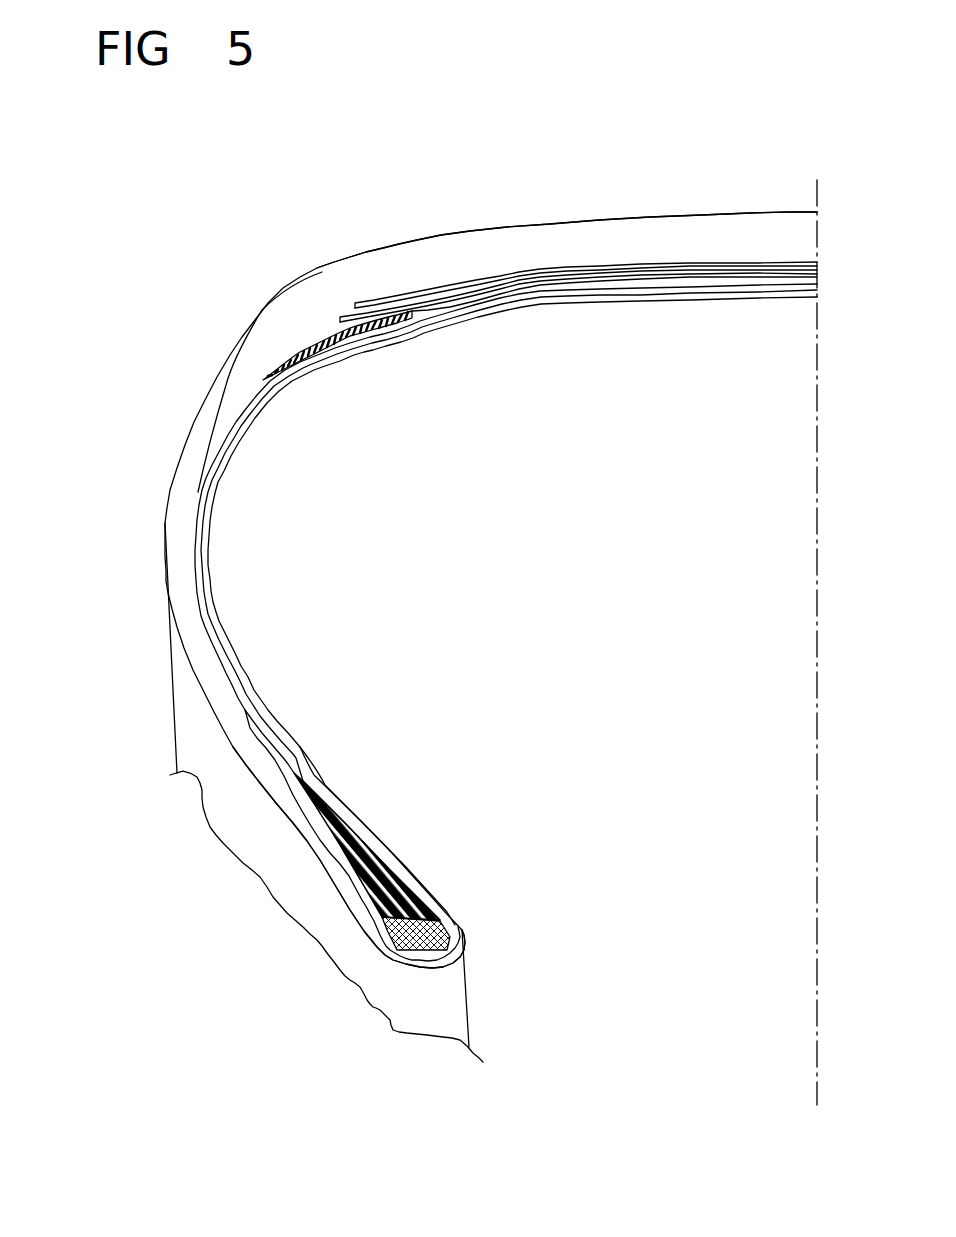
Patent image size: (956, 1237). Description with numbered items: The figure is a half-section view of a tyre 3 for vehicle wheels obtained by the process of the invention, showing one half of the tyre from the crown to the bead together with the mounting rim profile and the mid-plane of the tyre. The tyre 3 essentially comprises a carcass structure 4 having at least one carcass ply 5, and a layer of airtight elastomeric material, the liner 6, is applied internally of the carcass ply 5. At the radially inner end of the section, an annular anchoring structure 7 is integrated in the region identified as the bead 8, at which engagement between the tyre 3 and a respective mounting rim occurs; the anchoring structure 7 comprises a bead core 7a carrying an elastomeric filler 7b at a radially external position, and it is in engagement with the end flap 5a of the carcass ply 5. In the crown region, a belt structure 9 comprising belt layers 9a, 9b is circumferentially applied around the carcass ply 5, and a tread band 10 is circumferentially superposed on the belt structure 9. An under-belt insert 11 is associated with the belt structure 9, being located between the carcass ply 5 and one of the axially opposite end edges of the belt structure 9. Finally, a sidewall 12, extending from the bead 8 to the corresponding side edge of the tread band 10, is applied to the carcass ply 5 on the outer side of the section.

The tyre 3 is at (118, 616).
The carcass structure 4 is at (182, 551).
The carcass ply 5 is at (247, 710).
The end flaps of the carcass ply 5a is at (367, 903).
The liner 6 is at (370, 342).
The annular anchoring structure 7 is at (396, 840).
The bead core 7a is at (465, 931).
The elastomeric filler 7b is at (352, 862).
The bead 8 is at (455, 877).
The belt structure 9 is at (770, 250).
The belt layer 9a is at (620, 280).
The belt layer 9b is at (580, 267).
The tread band 10 is at (680, 227).
The under-belt insert 11 is at (332, 324).
The sidewall 12 is at (180, 492).